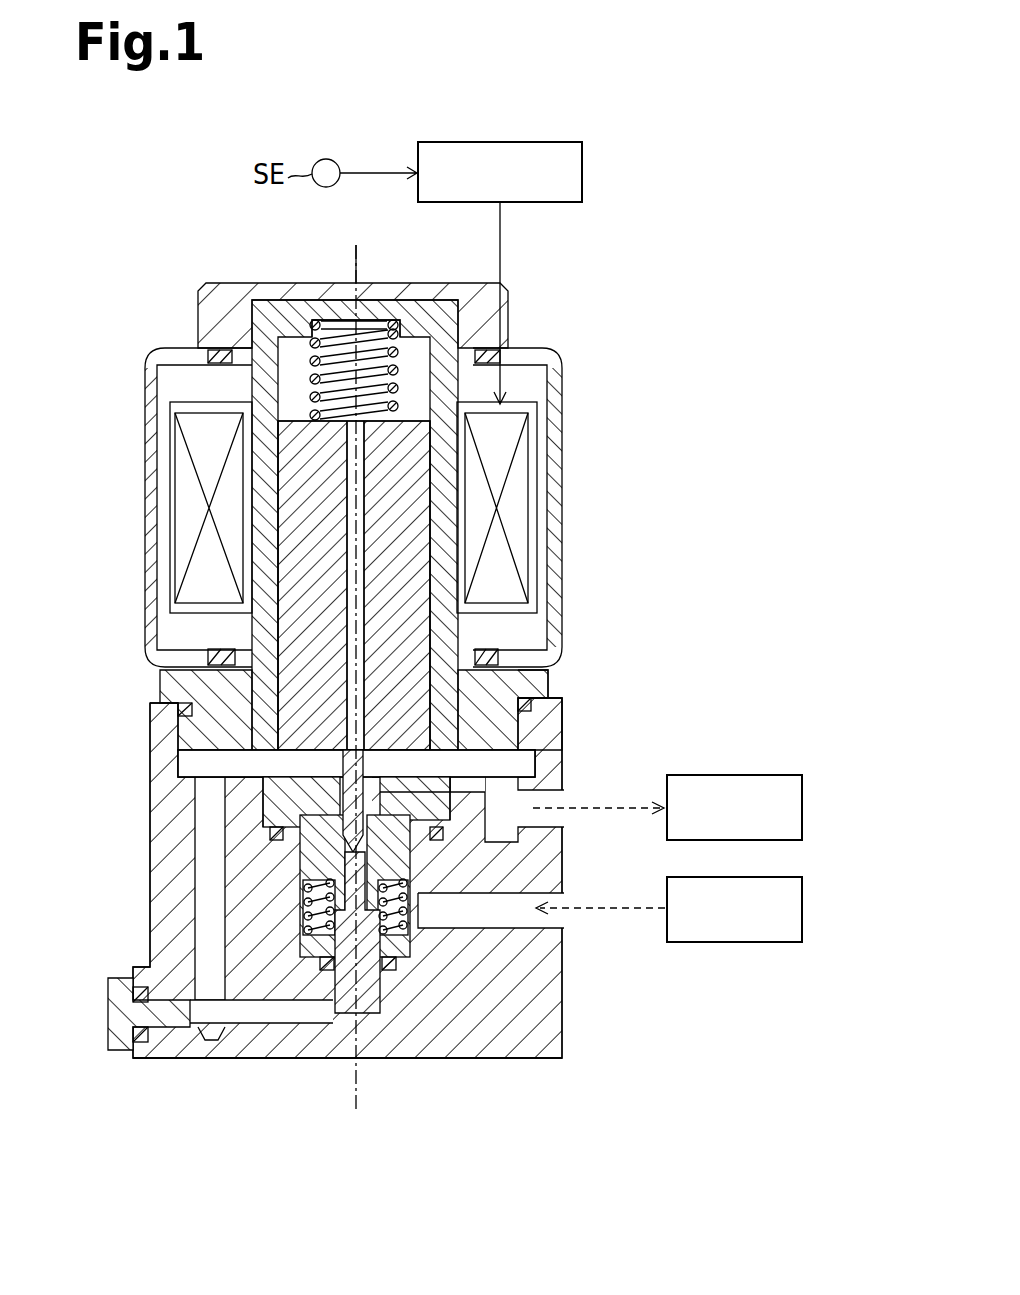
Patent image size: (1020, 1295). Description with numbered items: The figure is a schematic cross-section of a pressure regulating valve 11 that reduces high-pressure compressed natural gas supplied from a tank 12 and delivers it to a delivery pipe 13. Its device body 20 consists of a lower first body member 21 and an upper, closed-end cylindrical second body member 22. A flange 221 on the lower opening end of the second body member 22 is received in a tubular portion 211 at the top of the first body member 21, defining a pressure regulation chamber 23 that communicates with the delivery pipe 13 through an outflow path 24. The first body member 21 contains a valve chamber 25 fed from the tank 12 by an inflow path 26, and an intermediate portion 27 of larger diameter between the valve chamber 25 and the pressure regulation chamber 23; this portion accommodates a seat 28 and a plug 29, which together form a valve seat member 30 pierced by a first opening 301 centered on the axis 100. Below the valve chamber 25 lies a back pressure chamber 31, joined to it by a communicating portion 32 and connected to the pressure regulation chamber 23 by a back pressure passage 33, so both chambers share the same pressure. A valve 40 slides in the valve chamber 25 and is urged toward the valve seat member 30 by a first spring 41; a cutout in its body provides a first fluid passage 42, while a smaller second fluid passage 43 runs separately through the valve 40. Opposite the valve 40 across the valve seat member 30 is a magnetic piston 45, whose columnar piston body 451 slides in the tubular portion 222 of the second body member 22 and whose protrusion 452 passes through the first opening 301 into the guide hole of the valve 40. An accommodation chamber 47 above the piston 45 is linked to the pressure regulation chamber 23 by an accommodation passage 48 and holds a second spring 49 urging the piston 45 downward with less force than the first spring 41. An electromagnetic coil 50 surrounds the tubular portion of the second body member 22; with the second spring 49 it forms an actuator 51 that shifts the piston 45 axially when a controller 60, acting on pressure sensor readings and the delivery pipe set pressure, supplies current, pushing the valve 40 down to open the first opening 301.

The pressure regulating valve 11 is at (117, 168).
The tank 12 is at (803, 910).
The delivery pipe 13 is at (803, 808).
The device body 20 is at (93, 673).
The first body member 21 is at (153, 730).
The second body member 22 is at (163, 677).
The pressure regulation chamber 23 is at (480, 760).
The outflow path 24 is at (553, 830).
The valve chamber 25 is at (320, 915).
The inflow path 26 is at (555, 917).
The intermediate portion 27 is at (260, 812).
The seat 28 is at (440, 800).
The plug 29 is at (470, 778).
The valve seat member 30 is at (607, 743).
The back pressure chamber 31 is at (340, 1012).
The communicating portion 32 is at (345, 1000).
The back pressure passage 33 is at (197, 895).
The valve 40 is at (373, 905).
The first spring 41 is at (305, 888).
The first fluid passage 42 is at (412, 855).
The second fluid passage 43 is at (376, 1000).
The piston 45 is at (423, 467).
The piston body 451 is at (423, 502).
The protrusion 452 is at (374, 788).
The accommodation chamber 47 is at (297, 372).
The accommodation passage 48 is at (343, 640).
The second spring 49 is at (340, 322).
The electromagnetic coil 50 is at (188, 500).
The actuator 51 is at (548, 393).
The controller 60 is at (582, 175).
The axis 100 is at (358, 1110).
The tubular portion 211 is at (561, 700).
The flange 221 is at (550, 671).
The tubular portion 222 is at (447, 572).
The first opening 301 is at (340, 770).